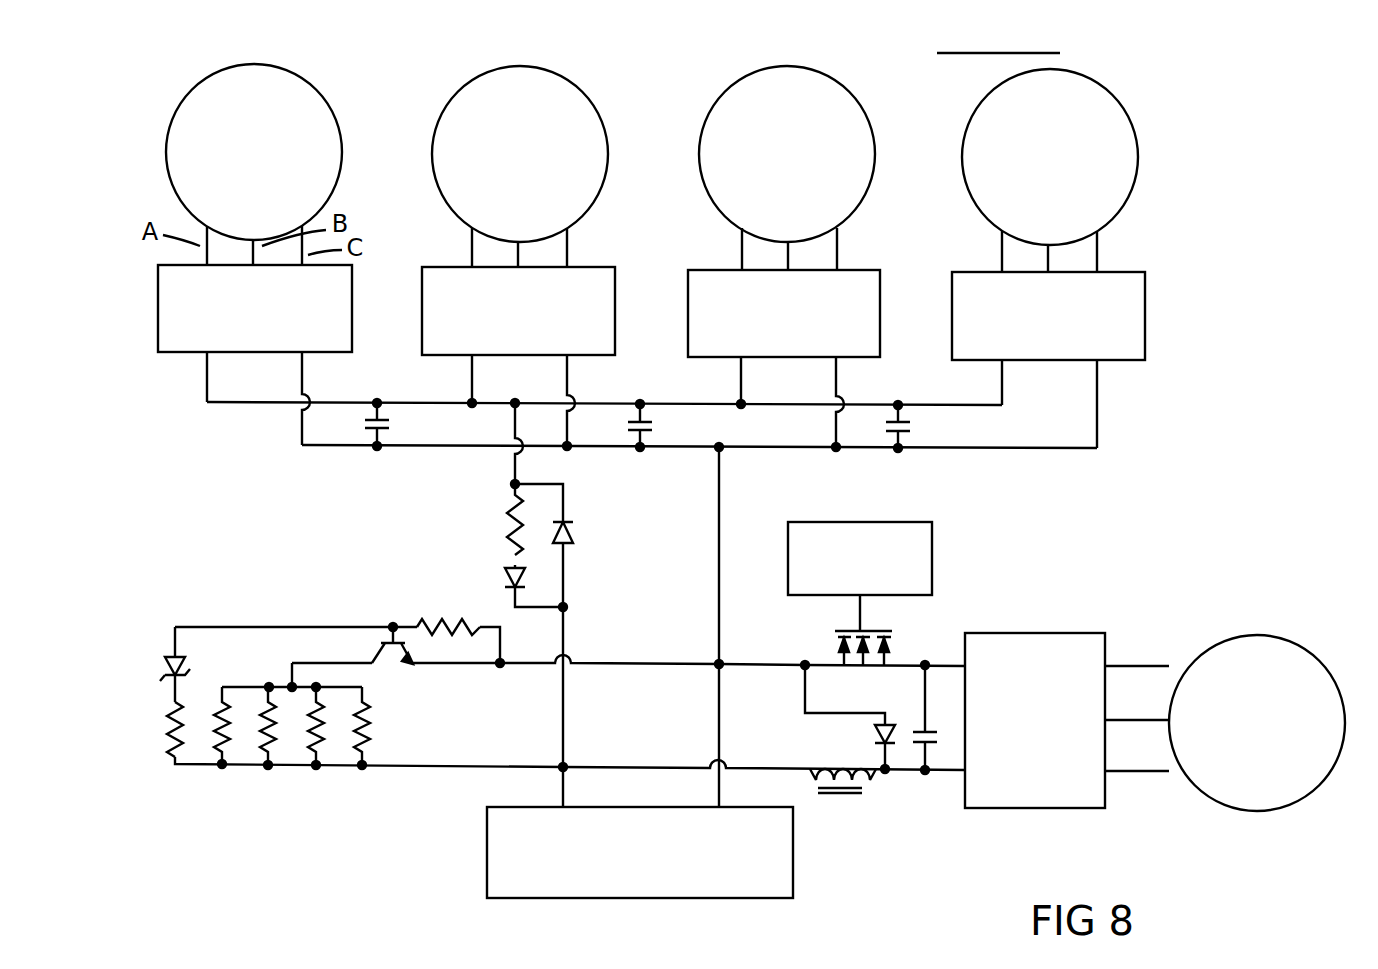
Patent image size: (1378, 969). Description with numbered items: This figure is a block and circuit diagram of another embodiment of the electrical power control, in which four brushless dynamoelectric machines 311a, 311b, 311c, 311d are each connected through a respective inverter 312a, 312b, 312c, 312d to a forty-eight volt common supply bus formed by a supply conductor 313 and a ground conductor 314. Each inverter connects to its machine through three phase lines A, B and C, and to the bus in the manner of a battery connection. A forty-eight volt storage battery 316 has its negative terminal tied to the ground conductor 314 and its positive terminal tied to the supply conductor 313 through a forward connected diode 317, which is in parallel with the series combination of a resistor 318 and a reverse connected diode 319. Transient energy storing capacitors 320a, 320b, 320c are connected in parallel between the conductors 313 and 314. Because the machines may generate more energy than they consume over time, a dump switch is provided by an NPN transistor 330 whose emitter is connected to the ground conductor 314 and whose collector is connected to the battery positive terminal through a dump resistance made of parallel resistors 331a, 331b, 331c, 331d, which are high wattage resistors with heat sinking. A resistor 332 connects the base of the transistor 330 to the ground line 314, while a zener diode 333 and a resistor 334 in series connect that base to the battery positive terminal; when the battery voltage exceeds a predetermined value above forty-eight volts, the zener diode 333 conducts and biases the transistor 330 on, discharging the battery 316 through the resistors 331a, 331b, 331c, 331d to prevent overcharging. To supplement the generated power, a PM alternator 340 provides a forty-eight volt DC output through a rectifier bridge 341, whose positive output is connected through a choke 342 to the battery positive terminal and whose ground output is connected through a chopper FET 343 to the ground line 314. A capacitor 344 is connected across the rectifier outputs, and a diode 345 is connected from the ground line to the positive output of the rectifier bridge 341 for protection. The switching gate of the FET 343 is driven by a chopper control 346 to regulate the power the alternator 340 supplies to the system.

The brushless dynamoelectric machine 311a is at (185, 103).
The brushless dynamoelectric machine 311b is at (578, 100).
The brushless dynamoelectric machine 311c is at (850, 102).
The brushless dynamoelectric machine 311d is at (1108, 110).
The inverter 312a is at (166, 272).
The inverter 312b is at (430, 270).
The inverter 312c is at (700, 274).
The inverter 312d is at (968, 276).
The supply conductor 313 is at (433, 403).
The ground conductor 314 is at (455, 448).
The storage battery 316 is at (782, 843).
The forward connected diode 317 is at (576, 533).
The resistor 318 is at (506, 529).
The reverse connected diode 319 is at (505, 580).
The transient energy storing capacitor 320a is at (368, 420).
The transient energy storing capacitor 320b is at (634, 420).
The transient energy storing capacitor 320c is at (888, 421).
The NPN transistor 330 is at (385, 652).
The resistor 331a is at (216, 740).
The resistor 331b is at (262, 740).
The resistor 331c is at (322, 745).
The resistor 331d is at (372, 742).
The resistor 332 is at (438, 622).
The zener diode 333 is at (165, 660).
The resistor 334 is at (170, 732).
The PM alternator 340 is at (1262, 640).
The rectifier bridge 341 is at (1028, 638).
The choke 342 is at (868, 778).
The chopper FET 343 is at (840, 660).
The capacitor 344 is at (924, 748).
The diode 345 is at (872, 731).
The chopper control 346 is at (855, 522).